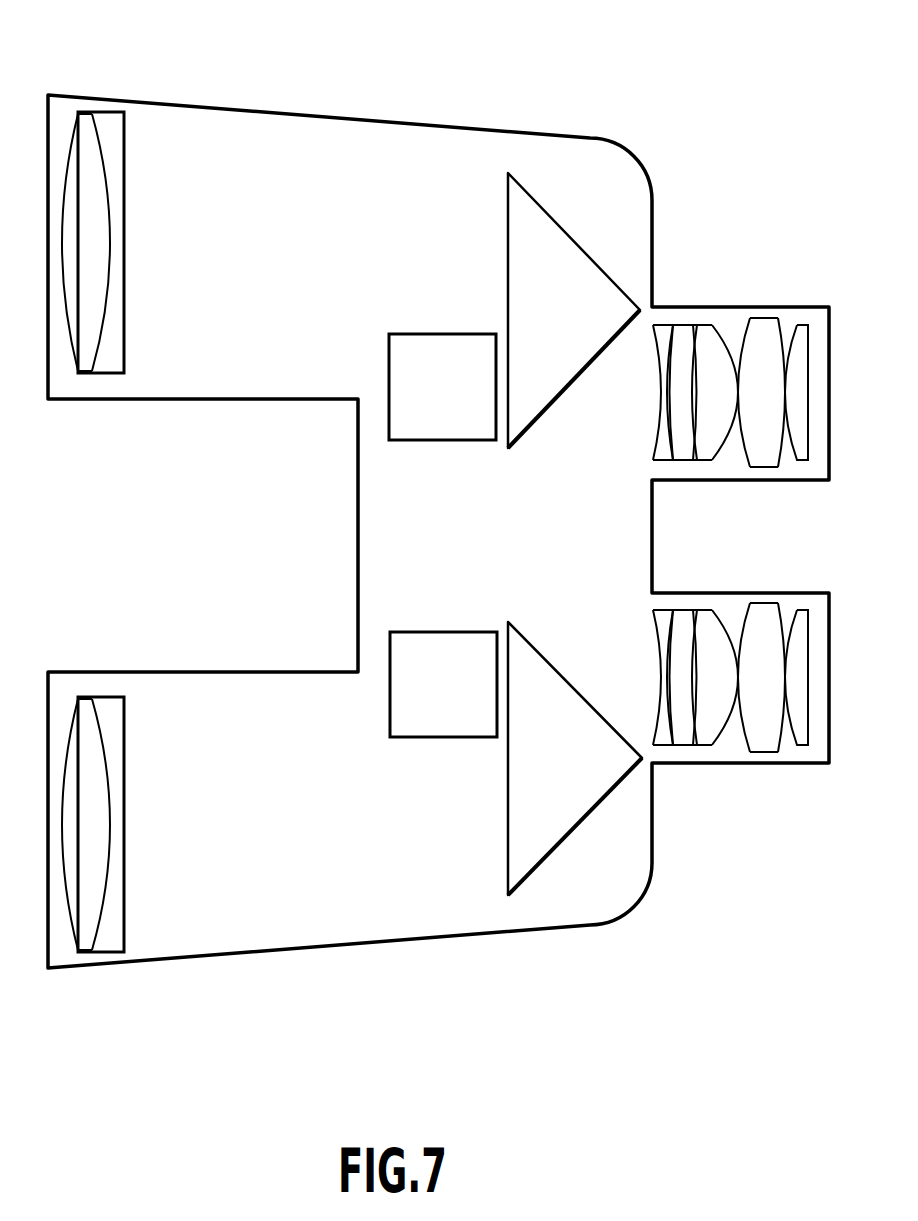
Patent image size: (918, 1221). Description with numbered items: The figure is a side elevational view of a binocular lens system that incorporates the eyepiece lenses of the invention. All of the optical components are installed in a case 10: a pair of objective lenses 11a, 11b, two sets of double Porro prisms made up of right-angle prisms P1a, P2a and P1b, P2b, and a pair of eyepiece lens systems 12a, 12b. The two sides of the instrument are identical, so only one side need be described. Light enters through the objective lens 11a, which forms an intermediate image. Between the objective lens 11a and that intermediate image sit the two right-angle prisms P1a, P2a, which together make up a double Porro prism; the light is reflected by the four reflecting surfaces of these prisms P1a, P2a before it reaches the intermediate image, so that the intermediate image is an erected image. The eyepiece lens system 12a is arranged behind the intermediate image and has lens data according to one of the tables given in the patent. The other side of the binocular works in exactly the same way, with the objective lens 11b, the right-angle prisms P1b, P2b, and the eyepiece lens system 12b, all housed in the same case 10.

The case 10 is at (538, 130).
The objective lens 11a is at (103, 112).
The objective lens 11b is at (102, 953).
The eyepiece lens system 12a is at (732, 325).
The eyepiece lens system 12b is at (732, 746).
The right-angle prism P1a is at (587, 252).
The right-angle prism P1b is at (590, 815).
The right-angle prism P2a is at (422, 333).
The right-angle prism P2b is at (433, 737).